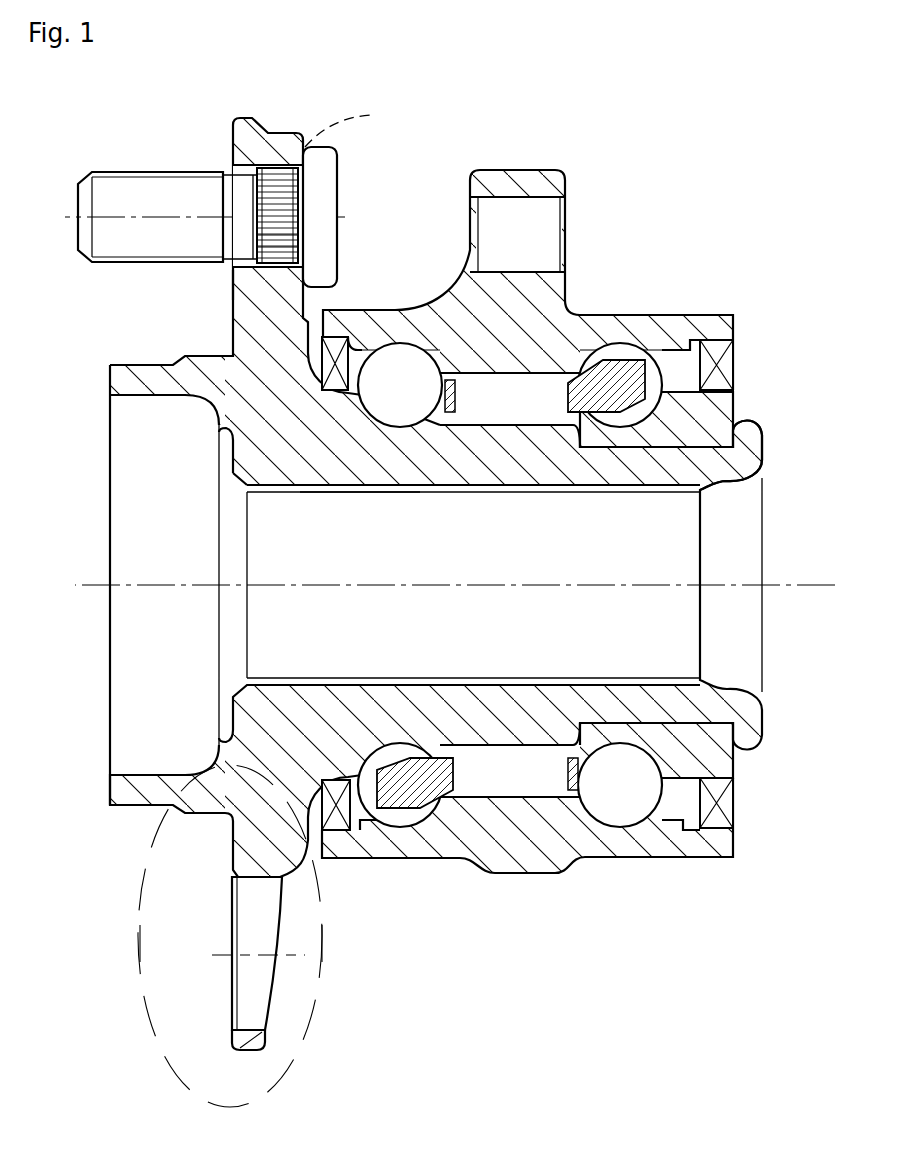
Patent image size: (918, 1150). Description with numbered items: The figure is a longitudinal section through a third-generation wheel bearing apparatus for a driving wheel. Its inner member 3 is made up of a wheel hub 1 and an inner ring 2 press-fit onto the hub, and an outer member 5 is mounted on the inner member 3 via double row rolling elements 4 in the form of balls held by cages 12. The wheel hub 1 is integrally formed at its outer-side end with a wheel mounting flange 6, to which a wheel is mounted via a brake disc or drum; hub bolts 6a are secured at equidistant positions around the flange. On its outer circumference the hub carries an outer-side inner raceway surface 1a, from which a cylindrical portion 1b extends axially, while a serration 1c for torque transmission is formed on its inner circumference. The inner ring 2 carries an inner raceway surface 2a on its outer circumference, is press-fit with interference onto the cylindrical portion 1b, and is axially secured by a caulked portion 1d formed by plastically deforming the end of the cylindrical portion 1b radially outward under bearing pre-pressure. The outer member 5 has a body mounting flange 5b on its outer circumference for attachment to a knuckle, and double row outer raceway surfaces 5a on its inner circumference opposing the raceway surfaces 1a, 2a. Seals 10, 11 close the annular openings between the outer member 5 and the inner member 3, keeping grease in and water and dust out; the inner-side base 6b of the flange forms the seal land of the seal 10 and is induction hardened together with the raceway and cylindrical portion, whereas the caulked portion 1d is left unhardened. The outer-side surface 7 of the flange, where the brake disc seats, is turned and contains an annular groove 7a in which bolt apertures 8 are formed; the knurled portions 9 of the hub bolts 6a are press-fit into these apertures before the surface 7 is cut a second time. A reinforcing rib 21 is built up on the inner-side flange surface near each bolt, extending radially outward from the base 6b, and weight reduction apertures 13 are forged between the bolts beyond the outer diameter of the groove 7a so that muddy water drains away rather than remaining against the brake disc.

The wheel hub 1 is at (242, 415).
The inner raceway surface 1a is at (392, 398).
The cylindrical portion 1b is at (675, 425).
The serration 1c is at (352, 490).
The caulked portion 1d is at (745, 442).
The inner ring 2 is at (735, 395).
The inner raceway surface 2a is at (590, 400).
The inner member 3 is at (228, 463).
The rolling elements 4 is at (600, 867).
The outer member 5 is at (422, 315).
The outer raceway surfaces 5a is at (400, 360).
The body mounting flange 5b is at (517, 185).
The wheel mounting flange 6 is at (228, 212).
The hub bolts 6a is at (148, 190).
The inner-side base 6b is at (355, 362).
The outer-side surface 7 is at (235, 310).
The annular groove 7a is at (233, 273).
The bolt apertures 8 is at (288, 180).
The knurled portions 9 is at (298, 245).
The seal 10 is at (345, 830).
The seal 11 is at (735, 807).
The cages 12 is at (568, 447).
The weight reduction apertures 13 is at (258, 880).
The reinforcing rib 21 is at (355, 121).